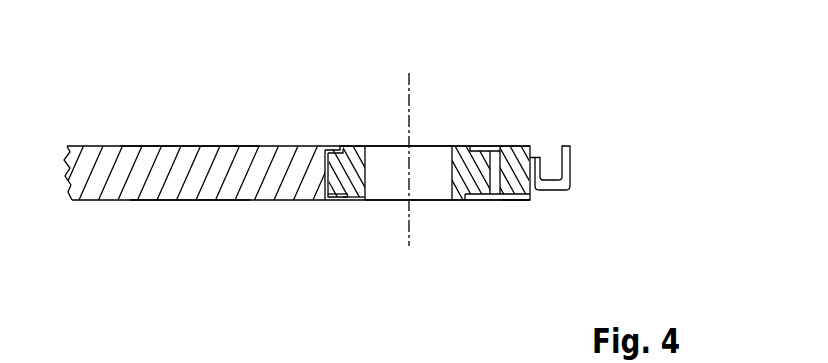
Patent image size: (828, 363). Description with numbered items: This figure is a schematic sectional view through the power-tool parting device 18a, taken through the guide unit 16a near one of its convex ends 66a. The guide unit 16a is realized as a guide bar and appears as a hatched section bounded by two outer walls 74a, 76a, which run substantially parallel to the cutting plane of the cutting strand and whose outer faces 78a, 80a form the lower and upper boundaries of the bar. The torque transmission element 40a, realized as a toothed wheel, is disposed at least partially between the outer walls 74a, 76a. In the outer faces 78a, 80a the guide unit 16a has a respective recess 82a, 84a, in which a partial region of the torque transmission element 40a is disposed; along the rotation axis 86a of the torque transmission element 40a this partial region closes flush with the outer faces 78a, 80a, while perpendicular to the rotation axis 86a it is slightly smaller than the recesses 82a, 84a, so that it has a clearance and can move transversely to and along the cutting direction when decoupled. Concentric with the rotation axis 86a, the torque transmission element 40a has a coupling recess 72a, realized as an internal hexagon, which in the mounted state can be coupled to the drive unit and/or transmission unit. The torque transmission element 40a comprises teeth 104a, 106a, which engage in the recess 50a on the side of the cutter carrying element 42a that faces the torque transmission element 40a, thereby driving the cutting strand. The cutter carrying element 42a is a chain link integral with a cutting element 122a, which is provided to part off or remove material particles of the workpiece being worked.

The guide unit 16a is at (90, 200).
The outer wall 74a is at (170, 201).
The outer wall 76a is at (158, 146).
The outer face 78a is at (213, 201).
The outer face 80a is at (216, 146).
The recess 84a is at (338, 187).
The torque transmission element 40a is at (352, 198).
The tooth 104a is at (325, 199).
The recess 82a is at (352, 196).
The coupling recess 72a is at (426, 182).
The rotation axis 86a is at (410, 83).
The tooth 106a is at (462, 196).
The recess 50a is at (495, 146).
The cutter carrying element 42a is at (519, 199).
The cutting element 122a is at (576, 176).
The power-tool parting device 18a is at (542, 144).
The convex end 66a is at (568, 226).